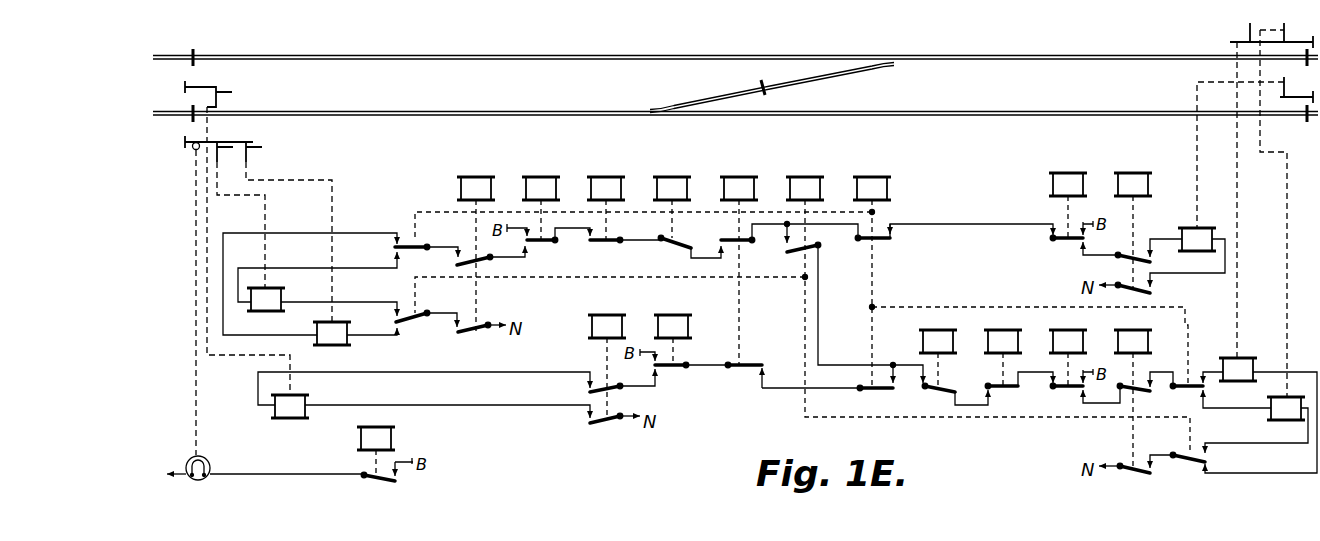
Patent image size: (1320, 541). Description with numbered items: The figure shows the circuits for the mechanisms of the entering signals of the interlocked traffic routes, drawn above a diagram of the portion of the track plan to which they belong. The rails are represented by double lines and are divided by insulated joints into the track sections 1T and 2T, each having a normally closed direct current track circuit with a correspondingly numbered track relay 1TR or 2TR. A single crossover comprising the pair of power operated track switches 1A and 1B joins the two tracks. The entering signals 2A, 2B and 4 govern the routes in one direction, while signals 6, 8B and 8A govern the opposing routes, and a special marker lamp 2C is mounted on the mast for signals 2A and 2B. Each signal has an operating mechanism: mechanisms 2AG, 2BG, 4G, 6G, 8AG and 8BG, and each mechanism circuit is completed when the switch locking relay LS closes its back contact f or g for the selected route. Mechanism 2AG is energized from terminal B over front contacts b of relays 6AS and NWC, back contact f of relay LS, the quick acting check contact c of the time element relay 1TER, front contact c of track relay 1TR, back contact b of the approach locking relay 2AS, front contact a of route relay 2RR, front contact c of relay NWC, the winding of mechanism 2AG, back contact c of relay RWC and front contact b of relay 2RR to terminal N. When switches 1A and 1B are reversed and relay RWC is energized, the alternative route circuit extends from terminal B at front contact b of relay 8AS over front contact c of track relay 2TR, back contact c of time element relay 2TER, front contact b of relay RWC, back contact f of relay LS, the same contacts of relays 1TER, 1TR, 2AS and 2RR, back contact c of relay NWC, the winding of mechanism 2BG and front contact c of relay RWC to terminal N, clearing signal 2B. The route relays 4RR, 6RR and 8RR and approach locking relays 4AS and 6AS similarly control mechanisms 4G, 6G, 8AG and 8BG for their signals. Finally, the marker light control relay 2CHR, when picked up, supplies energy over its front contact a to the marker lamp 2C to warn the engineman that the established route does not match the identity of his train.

The track section 1T is at (735, 48).
The track section 2T is at (735, 103).
The power operated track switch 1A is at (701, 96).
The power operated track switch 1B is at (834, 80).
The entering signal 4 is at (224, 235).
The entering signal 6 is at (1255, 150).
The entering signal 8A is at (1263, 187).
The entering signal 8B is at (1288, 207).
The marker lamp 2C is at (208, 460).
The entering signal 2B is at (241, 215).
The entering signal 2A is at (289, 232).
The route relay 2RR is at (474, 243).
The approach locking relay 2AS is at (540, 198).
The track relay 1TR is at (607, 198).
The time element relay 1TER is at (673, 201).
The switch locking relay LS is at (741, 261).
The reverse switch correspondence relay RWC is at (798, 308).
The normal switch correspondence relay NWC is at (795, 272).
The approach locking relay 6AS is at (1067, 195).
The route relay 6RR is at (1132, 221).
The signal mechanism 6G is at (1197, 228).
The signal mechanism 2BG is at (267, 290).
The signal mechanism 2AG is at (333, 324).
The signal mechanism 4G is at (290, 396).
The marker light control relay 2CHR is at (377, 444).
The route relay 4RR is at (604, 358).
The approach locking relay 4AS is at (671, 330).
The time element relay 2TER is at (938, 350).
The track relay 2TR is at (1004, 348).
The approach locking relay 8AS is at (1068, 348).
The route relay 8RR is at (1133, 390).
The signal mechanism 8AG is at (1237, 359).
The signal mechanism 8BG is at (1286, 398).